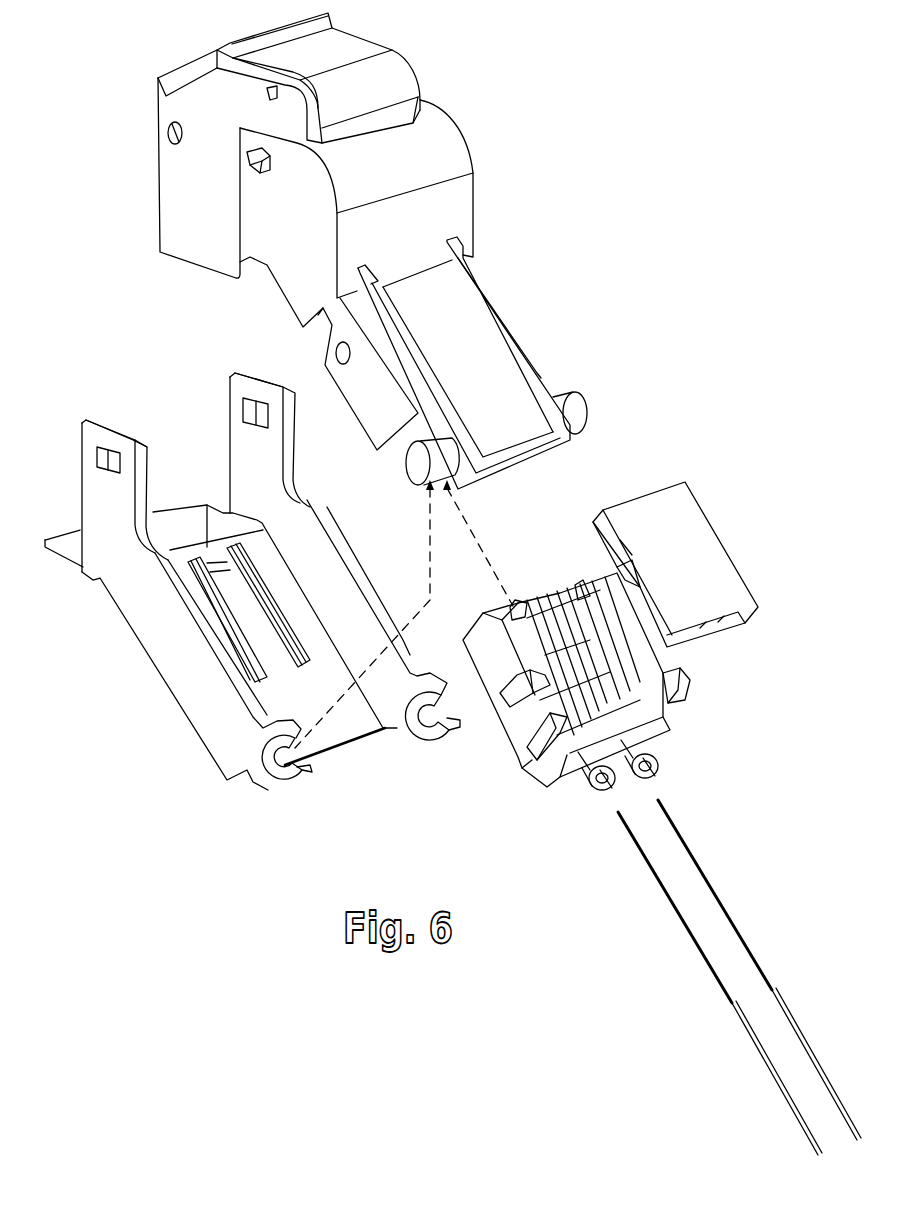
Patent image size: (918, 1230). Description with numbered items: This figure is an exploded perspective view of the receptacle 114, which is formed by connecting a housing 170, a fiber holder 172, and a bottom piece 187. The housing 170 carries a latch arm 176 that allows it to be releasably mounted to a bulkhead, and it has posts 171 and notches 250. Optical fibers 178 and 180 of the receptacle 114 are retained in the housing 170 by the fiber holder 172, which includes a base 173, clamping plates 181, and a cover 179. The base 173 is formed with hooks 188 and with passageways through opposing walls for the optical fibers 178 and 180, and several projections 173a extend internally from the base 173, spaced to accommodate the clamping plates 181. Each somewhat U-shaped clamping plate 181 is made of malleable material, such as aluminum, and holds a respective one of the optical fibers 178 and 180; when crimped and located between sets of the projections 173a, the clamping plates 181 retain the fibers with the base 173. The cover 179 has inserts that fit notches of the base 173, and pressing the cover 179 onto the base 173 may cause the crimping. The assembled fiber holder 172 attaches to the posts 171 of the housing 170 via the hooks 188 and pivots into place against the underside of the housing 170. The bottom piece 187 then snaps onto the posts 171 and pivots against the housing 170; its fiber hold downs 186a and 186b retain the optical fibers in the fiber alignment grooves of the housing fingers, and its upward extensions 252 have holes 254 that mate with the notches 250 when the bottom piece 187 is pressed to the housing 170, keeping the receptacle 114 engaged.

The receptacle 114 is at (629, 199).
The housing 170 is at (473, 188).
The posts 171 is at (410, 468).
The fiber holder 172 is at (745, 527).
The base 173 is at (480, 663).
The projections 173a is at (630, 710).
The latch arm 176 is at (348, 42).
The optical fiber 178 is at (712, 973).
The cover 179 is at (697, 498).
The optical fiber 180 is at (733, 917).
The clamping plates 181 is at (583, 580).
The fiber hold down 186a is at (223, 610).
The fiber hold down 186b is at (260, 603).
The bottom piece 187 is at (117, 603).
The hooks 188 is at (682, 690).
The notches 250 is at (253, 163).
The upward extensions 252 is at (247, 373).
The holes 254 is at (100, 467).